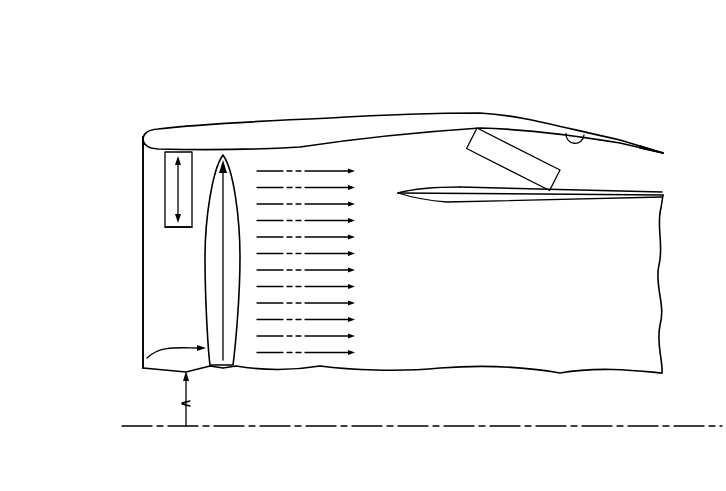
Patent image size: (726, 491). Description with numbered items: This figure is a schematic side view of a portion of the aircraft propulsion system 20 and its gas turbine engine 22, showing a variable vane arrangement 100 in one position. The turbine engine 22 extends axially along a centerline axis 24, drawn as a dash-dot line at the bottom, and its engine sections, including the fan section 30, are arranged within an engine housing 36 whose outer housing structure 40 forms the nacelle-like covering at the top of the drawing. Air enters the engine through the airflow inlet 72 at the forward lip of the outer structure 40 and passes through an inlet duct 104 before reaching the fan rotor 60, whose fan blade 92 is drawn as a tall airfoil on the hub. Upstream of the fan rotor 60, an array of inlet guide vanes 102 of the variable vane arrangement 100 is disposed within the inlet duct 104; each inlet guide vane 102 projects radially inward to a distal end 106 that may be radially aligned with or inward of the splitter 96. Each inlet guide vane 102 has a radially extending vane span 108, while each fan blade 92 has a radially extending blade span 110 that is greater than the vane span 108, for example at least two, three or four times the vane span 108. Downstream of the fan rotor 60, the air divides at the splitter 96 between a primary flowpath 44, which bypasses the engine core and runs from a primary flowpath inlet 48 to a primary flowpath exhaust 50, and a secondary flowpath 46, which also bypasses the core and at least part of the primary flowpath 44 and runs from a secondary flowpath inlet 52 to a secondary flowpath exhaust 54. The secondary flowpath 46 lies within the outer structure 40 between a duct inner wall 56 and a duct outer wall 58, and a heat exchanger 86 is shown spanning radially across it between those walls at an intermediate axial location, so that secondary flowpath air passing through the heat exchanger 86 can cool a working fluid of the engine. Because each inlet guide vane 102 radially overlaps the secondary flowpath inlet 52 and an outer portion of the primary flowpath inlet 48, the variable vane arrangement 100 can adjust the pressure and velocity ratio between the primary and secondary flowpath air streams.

The propulsion system 20 is at (168, 70).
The gas turbine engine 22 is at (168, 70).
The centerline axis 24 is at (130, 427).
The fan section 30 is at (229, 113).
The engine housing 36 is at (424, 84).
The outer housing structure 40 is at (327, 109).
The primary flowpath 44 is at (472, 302).
The secondary flowpath 46 is at (474, 181).
The primary flowpath inlet 48 is at (415, 299).
The primary flowpath exhaust 50 is at (662, 210).
The secondary flowpath inlet 52 is at (410, 171).
The secondary flowpath exhaust 54 is at (657, 173).
The duct inner wall 56 is at (593, 189).
The duct outer wall 58 is at (584, 135).
The fan rotor 60 is at (143, 368).
The airflow inlet 72 is at (143, 137).
The heat exchanger 86 is at (521, 147).
The fan blade 92 is at (207, 303).
The splitter 96 is at (433, 203).
The variable vane arrangement 100 is at (156, 187).
The inlet guide vane 102 is at (165, 218).
The inlet duct 104 is at (163, 265).
The distal end 106 is at (170, 227).
The vane span 108 is at (176, 188).
The blade span 110 is at (223, 265).